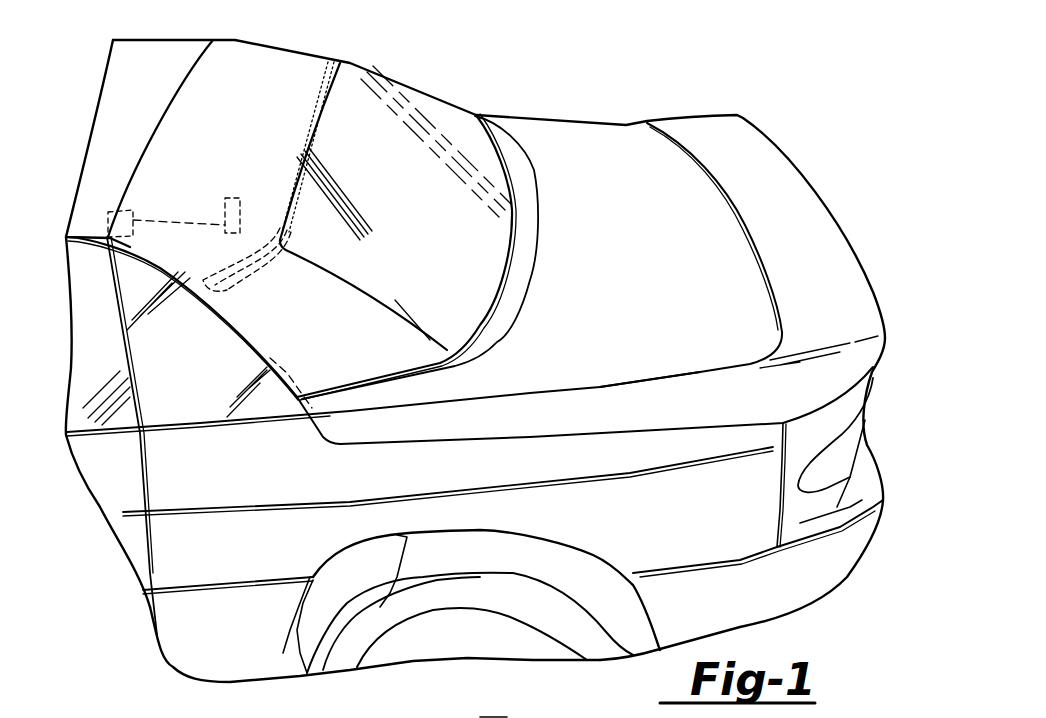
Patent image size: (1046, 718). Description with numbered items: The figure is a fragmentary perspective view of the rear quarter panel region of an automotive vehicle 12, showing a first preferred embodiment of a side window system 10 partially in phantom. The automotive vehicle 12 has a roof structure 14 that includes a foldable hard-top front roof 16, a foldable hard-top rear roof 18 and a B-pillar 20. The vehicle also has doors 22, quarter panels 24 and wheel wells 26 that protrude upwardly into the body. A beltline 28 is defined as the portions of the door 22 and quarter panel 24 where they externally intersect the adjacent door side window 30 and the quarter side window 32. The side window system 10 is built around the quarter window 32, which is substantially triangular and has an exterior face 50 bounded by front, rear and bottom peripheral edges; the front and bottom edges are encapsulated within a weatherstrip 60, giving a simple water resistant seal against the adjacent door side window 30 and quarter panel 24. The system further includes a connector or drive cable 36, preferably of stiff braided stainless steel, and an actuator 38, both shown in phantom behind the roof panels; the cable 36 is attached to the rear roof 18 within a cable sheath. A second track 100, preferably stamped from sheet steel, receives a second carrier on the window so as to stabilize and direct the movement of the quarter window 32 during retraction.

The side window system 10 is at (253, 293).
The automotive vehicle 12 is at (532, 98).
The roof structure 14 is at (103, 133).
The foldable hard-top front roof 16 is at (173, 80).
The foldable hard-top rear roof 18 is at (280, 87).
The B-pillar 20 is at (370, 335).
The doors 22 is at (115, 483).
The quarter panels 24 is at (200, 543).
The wheel wells 26 is at (327, 670).
The beltline 28 is at (200, 422).
The door side window 30 is at (107, 315).
The quarter side window 32 is at (170, 380).
The drive cable 36 is at (280, 163).
The actuator 38 is at (290, 127).
The exterior face 50 is at (207, 364).
The weatherstrip 60 is at (120, 347).
The second track 100 is at (462, 705).